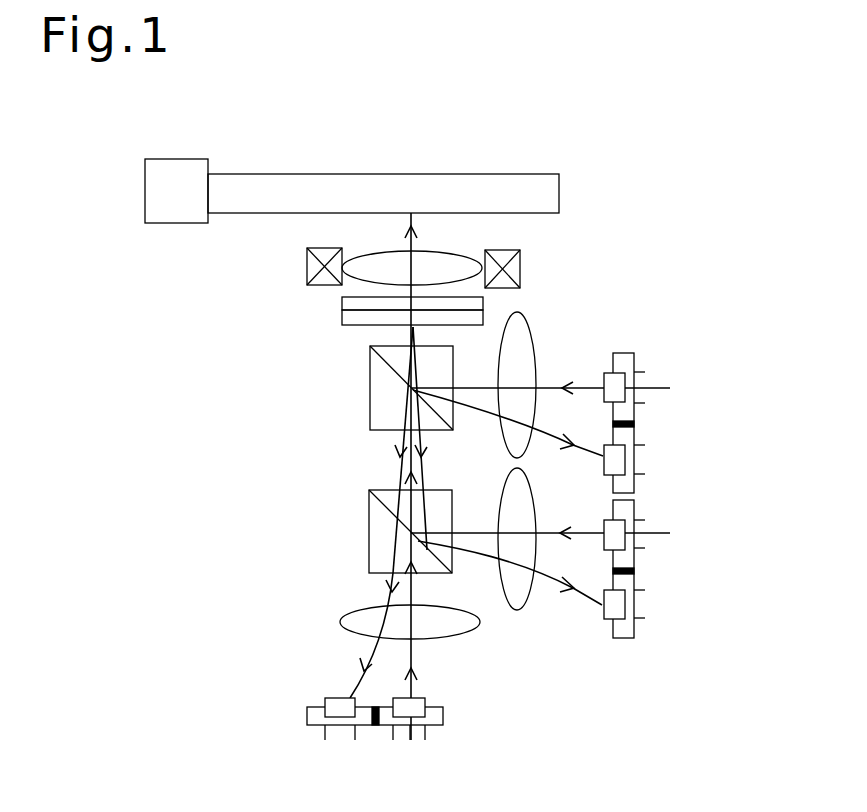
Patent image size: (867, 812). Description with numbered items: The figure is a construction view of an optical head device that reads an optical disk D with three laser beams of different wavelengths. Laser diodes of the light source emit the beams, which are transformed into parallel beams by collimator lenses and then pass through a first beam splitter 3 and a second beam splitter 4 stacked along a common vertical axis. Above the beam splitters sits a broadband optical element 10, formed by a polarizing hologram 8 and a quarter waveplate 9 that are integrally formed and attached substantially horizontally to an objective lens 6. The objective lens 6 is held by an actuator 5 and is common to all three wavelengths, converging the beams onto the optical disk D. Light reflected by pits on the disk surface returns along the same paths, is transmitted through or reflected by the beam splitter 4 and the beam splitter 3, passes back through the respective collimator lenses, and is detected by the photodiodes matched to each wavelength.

The optical disk D is at (478, 188).
The actuator 5 is at (307, 263).
The objective lens 6 is at (452, 263).
The quarter waveplate 9 is at (342, 300).
The polarizing hologram 8 is at (357, 327).
The broadband optical element 10 is at (342, 316).
The second beam splitter 4 is at (378, 382).
The first beam splitter 3 is at (378, 514).